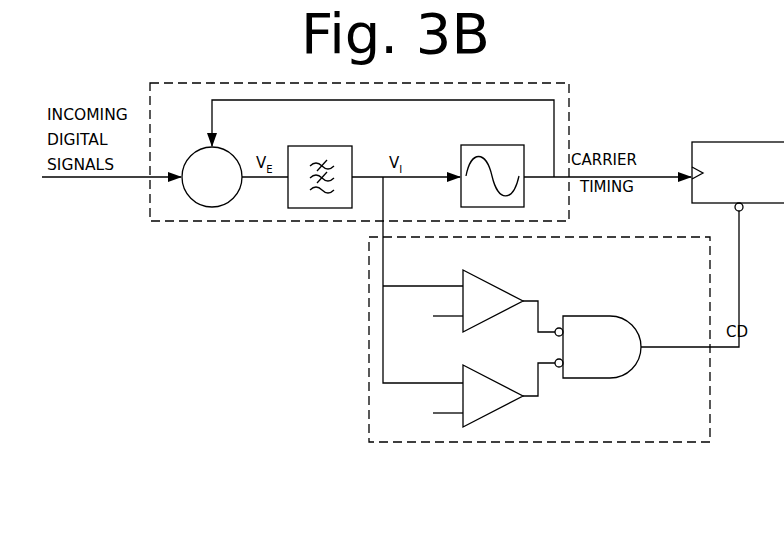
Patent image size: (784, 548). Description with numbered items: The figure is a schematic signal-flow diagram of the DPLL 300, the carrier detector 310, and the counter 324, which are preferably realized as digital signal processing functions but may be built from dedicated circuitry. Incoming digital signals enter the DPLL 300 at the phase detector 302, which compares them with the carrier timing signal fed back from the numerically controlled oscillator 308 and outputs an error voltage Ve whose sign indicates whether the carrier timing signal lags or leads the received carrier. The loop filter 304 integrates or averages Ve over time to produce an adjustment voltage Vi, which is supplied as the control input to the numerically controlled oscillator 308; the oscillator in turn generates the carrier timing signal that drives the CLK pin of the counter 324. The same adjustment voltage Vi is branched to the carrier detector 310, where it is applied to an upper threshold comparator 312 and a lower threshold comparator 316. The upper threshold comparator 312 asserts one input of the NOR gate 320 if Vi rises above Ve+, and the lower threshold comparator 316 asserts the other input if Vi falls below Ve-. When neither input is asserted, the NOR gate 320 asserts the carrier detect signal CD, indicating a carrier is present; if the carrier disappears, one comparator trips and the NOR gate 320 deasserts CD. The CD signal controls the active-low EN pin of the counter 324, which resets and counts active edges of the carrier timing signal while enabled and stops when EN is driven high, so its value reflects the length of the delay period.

The DPLL 300 is at (569, 128).
The phase detector 302 is at (237, 156).
The loop filter 304 is at (320, 146).
The numerically controlled oscillator 308 is at (478, 143).
The carrier detector 310 is at (369, 300).
The upper threshold comparator 312 is at (497, 281).
The lower threshold comparator 316 is at (480, 367).
The NOR gate 320 is at (585, 316).
The counter 324 is at (722, 142).